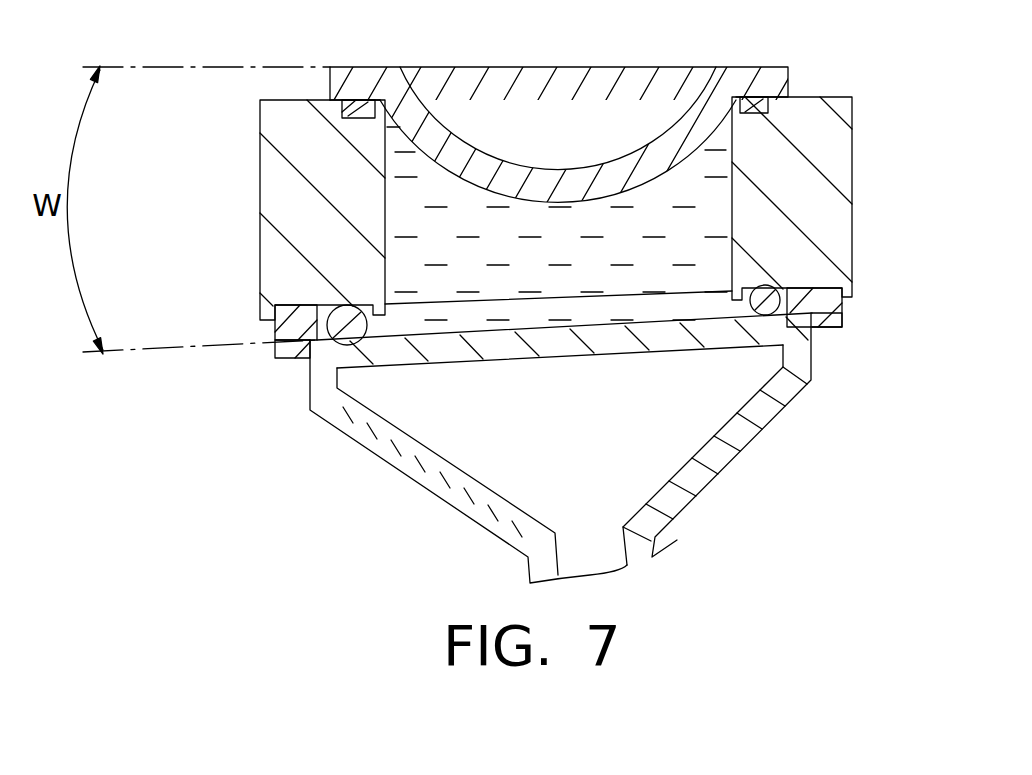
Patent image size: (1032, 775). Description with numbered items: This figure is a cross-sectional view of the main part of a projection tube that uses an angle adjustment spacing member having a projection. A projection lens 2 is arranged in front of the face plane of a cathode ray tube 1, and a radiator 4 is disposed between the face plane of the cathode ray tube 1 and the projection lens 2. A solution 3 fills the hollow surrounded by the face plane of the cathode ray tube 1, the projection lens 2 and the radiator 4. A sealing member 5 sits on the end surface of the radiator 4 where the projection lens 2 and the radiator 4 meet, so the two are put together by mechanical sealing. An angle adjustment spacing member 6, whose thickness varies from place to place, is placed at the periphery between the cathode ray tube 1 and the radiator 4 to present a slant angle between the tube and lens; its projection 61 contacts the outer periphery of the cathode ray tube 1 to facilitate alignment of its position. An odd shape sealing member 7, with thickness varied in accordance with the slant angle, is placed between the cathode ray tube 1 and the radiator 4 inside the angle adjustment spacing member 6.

The cathode ray tube 1 is at (760, 420).
The projection lens 2 is at (768, 78).
The solution 3 is at (428, 160).
The radiator 4 is at (838, 176).
The sealing member 5 is at (752, 100).
The angle adjustment spacing member 6 is at (818, 292).
The projection 61 is at (842, 322).
The odd shape sealing member 7 is at (768, 312).